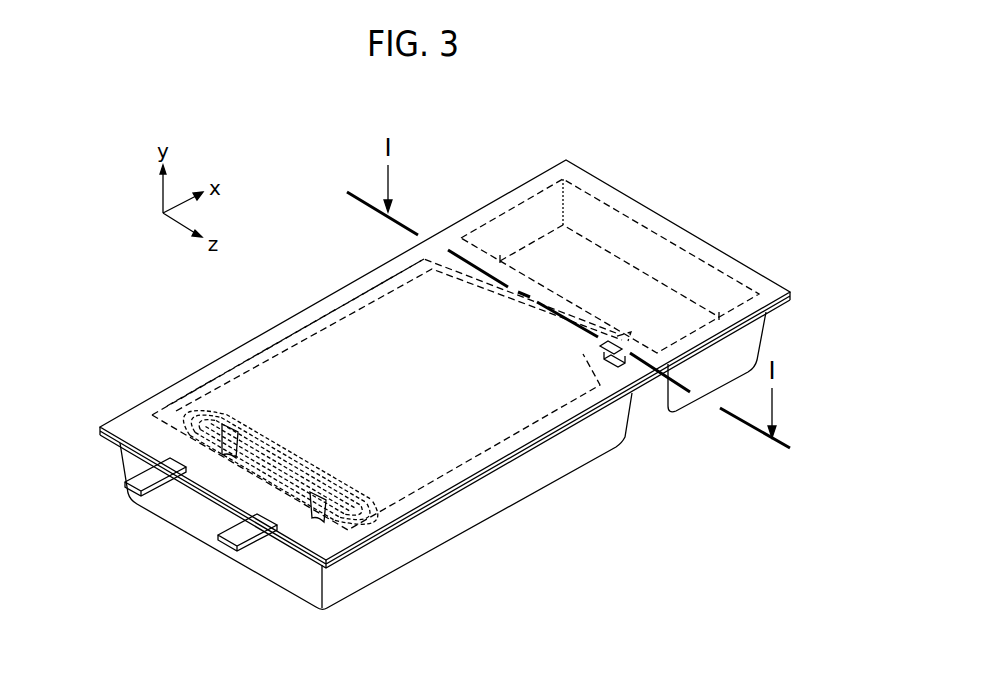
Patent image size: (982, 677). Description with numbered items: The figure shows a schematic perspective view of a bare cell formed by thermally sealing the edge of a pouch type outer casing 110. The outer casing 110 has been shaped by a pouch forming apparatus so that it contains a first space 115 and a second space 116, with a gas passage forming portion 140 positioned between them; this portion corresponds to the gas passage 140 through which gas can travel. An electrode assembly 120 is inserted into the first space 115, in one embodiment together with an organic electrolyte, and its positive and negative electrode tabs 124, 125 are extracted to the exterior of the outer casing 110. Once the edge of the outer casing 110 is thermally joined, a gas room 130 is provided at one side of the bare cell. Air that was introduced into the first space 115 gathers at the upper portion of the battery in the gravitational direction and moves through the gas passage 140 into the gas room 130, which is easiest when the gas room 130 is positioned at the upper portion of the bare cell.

The outer casing 110 is at (229, 352).
The first space 115 is at (323, 313).
The second space 116 is at (637, 243).
The electrode assembly 120 is at (241, 384).
The positive electrode tab 124 is at (130, 478).
The negative electrode tab 125 is at (222, 530).
The gas room 130 is at (721, 264).
The gas passage forming portion 140 is at (623, 367).